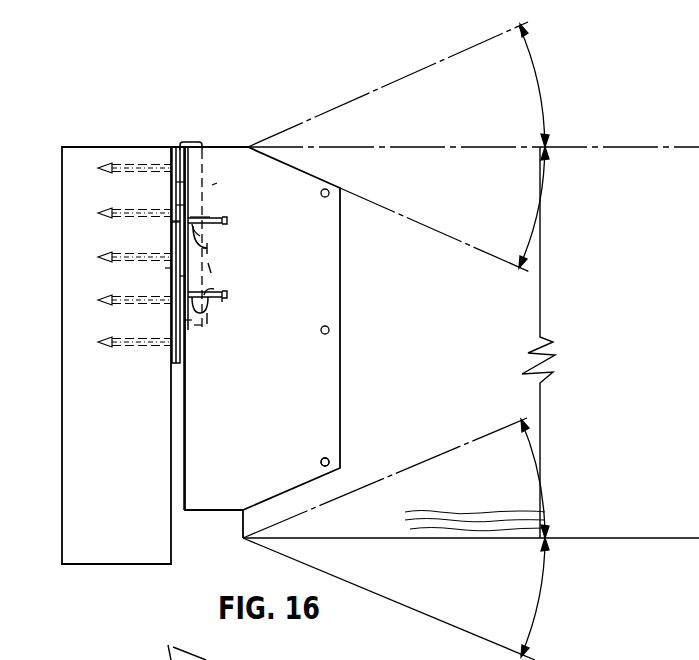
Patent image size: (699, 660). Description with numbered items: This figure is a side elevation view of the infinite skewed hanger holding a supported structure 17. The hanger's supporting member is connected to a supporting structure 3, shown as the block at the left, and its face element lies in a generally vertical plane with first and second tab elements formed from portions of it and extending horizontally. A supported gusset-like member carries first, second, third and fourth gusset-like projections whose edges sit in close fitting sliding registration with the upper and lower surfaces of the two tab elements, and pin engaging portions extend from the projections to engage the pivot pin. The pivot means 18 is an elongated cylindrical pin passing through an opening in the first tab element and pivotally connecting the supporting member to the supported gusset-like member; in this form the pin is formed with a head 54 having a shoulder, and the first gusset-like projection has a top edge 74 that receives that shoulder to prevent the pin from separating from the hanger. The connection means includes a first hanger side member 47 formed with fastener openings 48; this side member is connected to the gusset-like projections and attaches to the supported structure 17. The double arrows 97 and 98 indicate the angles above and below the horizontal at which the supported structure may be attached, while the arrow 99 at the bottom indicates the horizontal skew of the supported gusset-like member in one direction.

The supporting structure 3 is at (129, 148).
The head 54 is at (200, 146).
The top edge 74 is at (215, 146).
The fastener openings 48 is at (330, 457).
The first hanger side member 47 is at (213, 511).
The supported structure 17 is at (382, 540).
The double arrow 97 is at (538, 76).
The double arrow 98 is at (531, 236).
The pivot means 18 is at (198, 327).
The arrow 99 is at (40, 659).